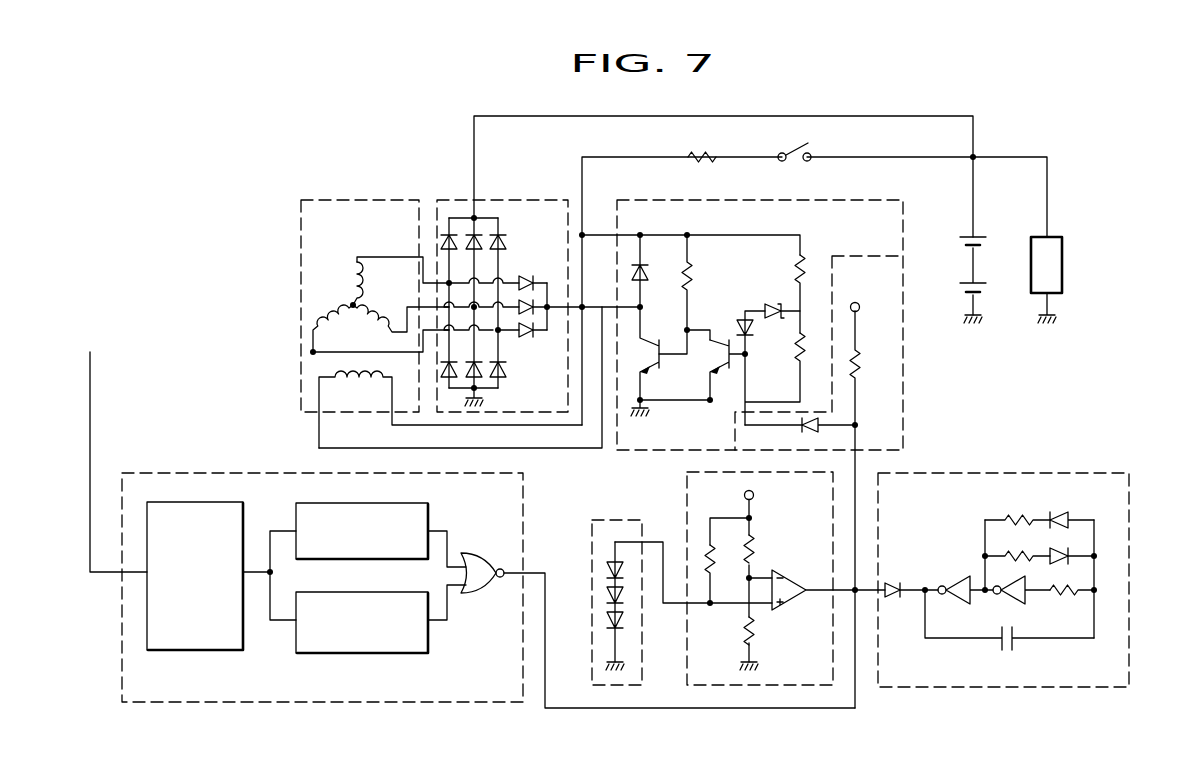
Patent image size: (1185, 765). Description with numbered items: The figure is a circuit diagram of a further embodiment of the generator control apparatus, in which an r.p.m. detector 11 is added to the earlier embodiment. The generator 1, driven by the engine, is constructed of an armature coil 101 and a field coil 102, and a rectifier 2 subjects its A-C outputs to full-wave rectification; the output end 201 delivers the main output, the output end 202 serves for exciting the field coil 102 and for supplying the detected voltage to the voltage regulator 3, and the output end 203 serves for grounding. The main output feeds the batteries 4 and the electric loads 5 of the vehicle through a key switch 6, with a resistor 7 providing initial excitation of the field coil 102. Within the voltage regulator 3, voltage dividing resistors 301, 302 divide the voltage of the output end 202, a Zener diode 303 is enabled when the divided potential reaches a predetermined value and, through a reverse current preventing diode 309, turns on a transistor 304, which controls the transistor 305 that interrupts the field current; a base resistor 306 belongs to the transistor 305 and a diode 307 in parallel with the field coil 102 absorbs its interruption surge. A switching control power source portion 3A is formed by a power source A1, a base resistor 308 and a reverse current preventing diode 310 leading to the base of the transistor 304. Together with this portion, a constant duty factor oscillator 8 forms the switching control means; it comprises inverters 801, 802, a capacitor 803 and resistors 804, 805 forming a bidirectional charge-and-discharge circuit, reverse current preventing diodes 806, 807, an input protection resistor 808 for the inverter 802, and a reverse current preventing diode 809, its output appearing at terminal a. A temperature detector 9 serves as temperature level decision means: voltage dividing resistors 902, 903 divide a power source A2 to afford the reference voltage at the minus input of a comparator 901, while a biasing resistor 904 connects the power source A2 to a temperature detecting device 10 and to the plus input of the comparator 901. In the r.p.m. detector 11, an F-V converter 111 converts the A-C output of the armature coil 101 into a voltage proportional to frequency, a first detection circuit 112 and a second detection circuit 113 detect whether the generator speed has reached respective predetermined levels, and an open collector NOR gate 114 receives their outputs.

The generator 1 is at (451, 295).
The armature coil 101 is at (357, 262).
The field coil 102 is at (460, 377).
The rectifier 2 is at (538, 274).
The output end 201 is at (474, 218).
The output end 202 is at (547, 290).
The output end 203 is at (474, 390).
The voltage regulator 3 is at (797, 448).
The switching control power source portion 3A is at (856, 482).
The voltage dividing resistor 301 is at (803, 262).
The voltage dividing resistor 302 is at (798, 355).
The Zener diode 303 is at (770, 305).
The transistor 304 is at (718, 372).
The transistor 305 is at (646, 369).
The base resistor 306 is at (691, 268).
The diode 307 is at (645, 263).
The base resistor 308 is at (858, 362).
The reverse current preventing diode 309 is at (741, 322).
The reverse current preventing diode 310 is at (820, 428).
The power source A1 is at (857, 302).
The batteries 4 is at (970, 266).
The electric loads 5 is at (1063, 240).
The key switch 6 is at (784, 153).
The resistor 7 is at (688, 157).
The constant duty factor oscillator 8 is at (1031, 552).
The inverter 801 is at (950, 585).
The inverter 802 is at (1008, 600).
The capacitor 803 is at (1012, 650).
The resistor 804 is at (1007, 520).
The resistor 805 is at (1007, 556).
The reverse current preventing diode 806 is at (1055, 516).
The reverse current preventing diode 807 is at (1072, 560).
The input protection resistor 808 is at (1062, 596).
The reverse current preventing diode 809 is at (893, 598).
The output terminal a is at (1096, 593).
The temperature detector 9 is at (764, 578).
The comparator 901 is at (783, 576).
The voltage dividing resistor 902 is at (752, 545).
The voltage dividing resistor 903 is at (752, 630).
The biasing resistor 904 is at (710, 545).
The power source A2 is at (754, 495).
The temperature detecting device 10 is at (615, 520).
The r.p.m. detector 11 is at (488, 584).
The F-V converter 111 is at (243, 502).
The first detection circuit 112 is at (428, 503).
The second detection circuit 113 is at (400, 655).
The NOR gate 114 is at (480, 593).